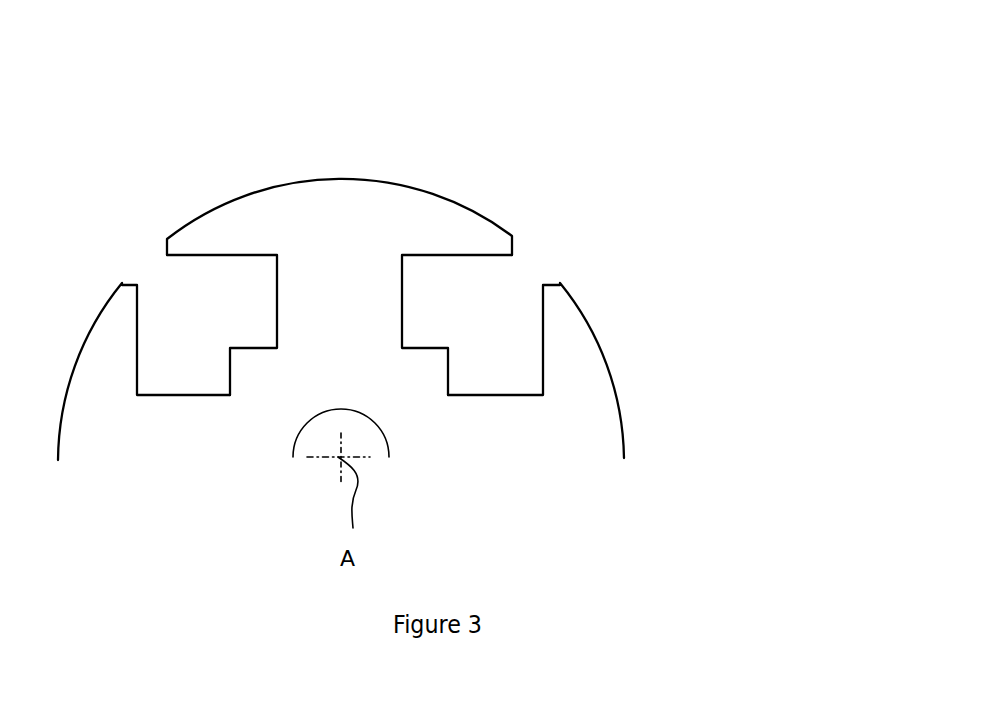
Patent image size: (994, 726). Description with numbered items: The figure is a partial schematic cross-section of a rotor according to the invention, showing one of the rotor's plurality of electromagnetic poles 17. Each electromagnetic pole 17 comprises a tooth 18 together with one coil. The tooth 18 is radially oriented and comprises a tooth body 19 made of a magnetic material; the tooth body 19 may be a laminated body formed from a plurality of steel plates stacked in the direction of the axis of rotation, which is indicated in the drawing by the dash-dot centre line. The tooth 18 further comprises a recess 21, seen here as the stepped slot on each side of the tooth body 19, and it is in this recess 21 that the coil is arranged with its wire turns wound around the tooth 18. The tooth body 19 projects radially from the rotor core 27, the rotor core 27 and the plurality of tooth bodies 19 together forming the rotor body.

The electromagnetic pole 17 is at (450, 167).
The tooth 18 is at (463, 203).
The tooth body 19 is at (342, 287).
The recess 21 is at (277, 310).
The rotor core 27 is at (413, 422).